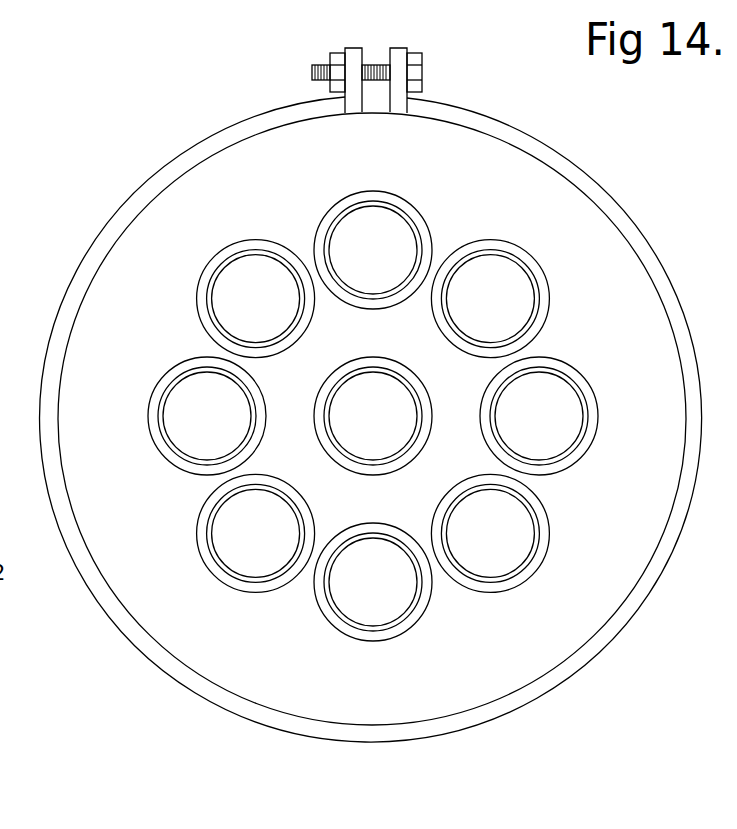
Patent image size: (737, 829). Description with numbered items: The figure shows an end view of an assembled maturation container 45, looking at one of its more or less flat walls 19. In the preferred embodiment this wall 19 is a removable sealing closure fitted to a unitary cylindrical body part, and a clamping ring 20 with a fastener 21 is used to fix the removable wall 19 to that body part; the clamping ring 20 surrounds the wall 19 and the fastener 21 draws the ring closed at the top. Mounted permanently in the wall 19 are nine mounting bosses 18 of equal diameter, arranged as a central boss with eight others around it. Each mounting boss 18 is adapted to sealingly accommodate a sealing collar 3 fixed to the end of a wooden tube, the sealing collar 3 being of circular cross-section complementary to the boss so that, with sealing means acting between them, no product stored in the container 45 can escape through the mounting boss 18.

The maturation container 45 is at (168, 122).
The fastener 21 is at (420, 57).
The mounting boss 18 is at (527, 252).
The sealing collar 3 is at (537, 307).
The wall 19 is at (568, 593).
The clamping ring 20 is at (550, 677).